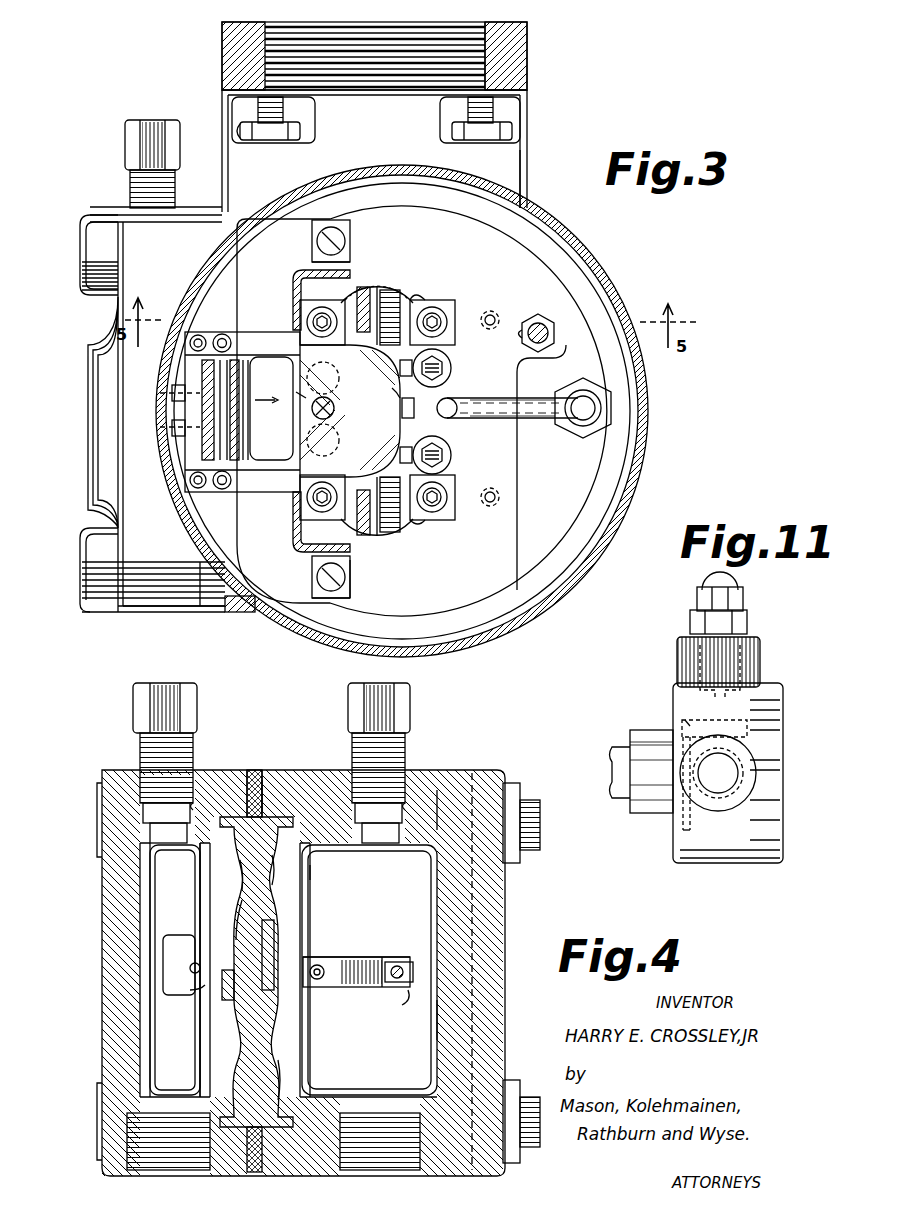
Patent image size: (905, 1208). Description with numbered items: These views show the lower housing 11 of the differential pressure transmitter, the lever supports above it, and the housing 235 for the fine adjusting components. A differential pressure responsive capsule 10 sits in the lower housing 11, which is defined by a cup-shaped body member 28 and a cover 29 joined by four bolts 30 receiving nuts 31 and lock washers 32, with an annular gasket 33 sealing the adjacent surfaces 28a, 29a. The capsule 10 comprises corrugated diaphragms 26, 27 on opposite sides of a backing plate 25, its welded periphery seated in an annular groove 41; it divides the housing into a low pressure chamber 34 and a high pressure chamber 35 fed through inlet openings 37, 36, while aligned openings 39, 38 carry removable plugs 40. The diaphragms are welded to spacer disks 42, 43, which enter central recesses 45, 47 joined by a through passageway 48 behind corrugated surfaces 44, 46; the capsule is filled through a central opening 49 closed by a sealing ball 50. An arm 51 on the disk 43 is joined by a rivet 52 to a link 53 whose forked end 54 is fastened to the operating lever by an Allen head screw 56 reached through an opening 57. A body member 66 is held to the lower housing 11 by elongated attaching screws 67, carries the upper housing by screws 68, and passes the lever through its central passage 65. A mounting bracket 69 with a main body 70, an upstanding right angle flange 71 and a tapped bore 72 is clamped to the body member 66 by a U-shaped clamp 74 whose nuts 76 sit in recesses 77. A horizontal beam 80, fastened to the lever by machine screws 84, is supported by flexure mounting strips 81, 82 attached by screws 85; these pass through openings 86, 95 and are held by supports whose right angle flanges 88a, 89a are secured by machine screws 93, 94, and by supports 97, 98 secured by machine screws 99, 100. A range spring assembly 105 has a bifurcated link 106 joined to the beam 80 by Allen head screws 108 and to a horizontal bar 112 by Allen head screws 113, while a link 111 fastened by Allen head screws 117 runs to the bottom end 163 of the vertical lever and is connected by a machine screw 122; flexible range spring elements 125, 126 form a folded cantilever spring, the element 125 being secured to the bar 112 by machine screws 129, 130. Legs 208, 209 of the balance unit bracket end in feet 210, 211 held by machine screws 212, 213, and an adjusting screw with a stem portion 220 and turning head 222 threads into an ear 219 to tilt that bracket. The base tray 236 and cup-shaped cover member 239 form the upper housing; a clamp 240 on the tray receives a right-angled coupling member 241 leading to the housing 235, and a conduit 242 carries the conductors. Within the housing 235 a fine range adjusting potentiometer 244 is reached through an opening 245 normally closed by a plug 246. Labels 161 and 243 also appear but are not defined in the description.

In FIG. 4, the differential pressure responsive capsule 10 is at (304, 870).
In FIG. 4, the lower housing 11 is at (508, 926).
In FIG. 4, the backing plate 25 is at (282, 1062).
In FIG. 4, the diaphragm 26 is at (222, 898).
In FIG. 4, the diaphragm 27 is at (280, 1085).
In FIG. 3, the body member 28 is at (240, 612).
In FIG. 4, the body member 28 is at (445, 775).
In FIG. 4, the surface of body member 28a is at (264, 768).
In FIG. 3, the cover 29 is at (150, 612).
In FIG. 4, the cover 29 is at (102, 948).
In FIG. 4, the surface of cover 29a is at (244, 766).
In FIG. 3, the bolts 30 is at (82, 222).
In FIG. 4, the bolts 30 is at (97, 802).
In FIG. 4, the nuts 31 is at (526, 786).
In FIG. 4, the lock washers 32 is at (476, 772).
In FIG. 3, the annular gasket 33 is at (222, 612).
In FIG. 4, the annular gasket 33 is at (254, 772).
In FIG. 4, the first pressure chamber 34 is at (160, 880).
In FIG. 4, the second pressure chamber 35 is at (430, 1040).
In FIG. 4, the inlet opening 36 is at (390, 1170).
In FIG. 4, the inlet opening 37 is at (160, 1170).
In FIG. 4, the opening 38 is at (407, 803).
In FIG. 4, the opening 39 is at (193, 800).
In FIG. 3, the plugs 40 is at (140, 120).
In FIG. 4, the plugs 40 is at (133, 698).
In FIG. 4, the annular groove 41 is at (282, 796).
In FIG. 4, the spacer disk 42 is at (215, 936).
In FIG. 4, the spacer disk 43 is at (312, 915).
In FIG. 4, the corrugated surface 44 is at (250, 875).
In FIG. 4, the central recess 45 is at (248, 917).
In FIG. 4, the corrugated surface 46 is at (275, 870).
In FIG. 4, the central recess 47 is at (259, 955).
In FIG. 4, the through passageway 48 is at (243, 987).
In FIG. 4, the central opening 49 is at (215, 990).
In FIG. 4, the sealing ball 50 is at (194, 970).
In FIG. 4, the arm 51 is at (318, 985).
In FIG. 4, the rivet 52 is at (340, 987).
In FIG. 4, the link 53 is at (372, 956).
In FIG. 4, the forked end 54 is at (398, 956).
In FIG. 4, the Allen head screw 56 is at (405, 995).
In FIG. 4, the opening 57 is at (415, 976).
In FIG. 3, the central passage 65 is at (365, 375).
In FIG. 3, the body member 66 is at (492, 245).
In FIG. 3, the elongated attaching screws 67 is at (292, 384).
In FIG. 3, the screws 68 is at (490, 312).
In FIG. 3, the mounting bracket 69 is at (528, 40).
In FIG. 3, the main body 70 is at (527, 190).
In FIG. 3, the right angle flange 71 is at (528, 60).
In FIG. 3, the tapped bore 72 is at (272, 22).
In FIG. 3, the U-shaped clamp 74 is at (494, 110).
In FIG. 3, the nuts 76 is at (240, 128).
In FIG. 3, the recesses 77 is at (225, 139).
In FIG. 3, the horizontal beam 80 is at (400, 292).
In FIG. 3, the flexure mounting strip 81 is at (378, 295).
In FIG. 3, the flexure mounting strip 82 is at (388, 525).
In FIG. 3, the machine screws 84 is at (432, 400).
In FIG. 3, the screws 85 is at (363, 292).
In FIG. 3, the opening 86 is at (395, 300).
In FIG. 3, the right angle flange 88a is at (297, 286).
In FIG. 3, the right angle flange 89a is at (420, 300).
In FIG. 3, the machine screw 93 is at (305, 312).
In FIG. 3, the machine screw 94 is at (440, 310).
In FIG. 3, the opening 95 is at (378, 540).
In FIG. 3, the support 97 is at (420, 522).
In FIG. 3, the support 98 is at (293, 548).
In FIG. 3, the machine screw 99 is at (445, 485).
In FIG. 3, the machine screw 100 is at (305, 510).
In FIG. 3, the range spring assembly 105 is at (195, 512).
In FIG. 3, the bifurcated link 106 is at (405, 525).
In FIG. 3, the Allen head screws 108 is at (400, 366).
In FIG. 3, the link 111 is at (271, 401).
In FIG. 3, the horizontal bar 112 is at (185, 455).
In FIG. 3, the Allen head screws 113 is at (198, 335).
In FIG. 3, the Allen head screws 117 is at (224, 334).
In FIG. 3, the machine screw 122 is at (318, 416).
In FIG. 3, the range spring element 125 is at (205, 408).
In FIG. 3, the range spring element 126 is at (238, 418).
In FIG. 3, the machine screw 129 is at (172, 392).
In FIG. 3, the machine screw 130 is at (172, 428).
In FIG. 3, the lever arm 161 is at (393, 383).
In FIG. 3, the bottom end of vertical lever 163 is at (305, 400).
In FIG. 3, the leg 208 is at (348, 266).
In FIG. 3, the leg 209 is at (352, 566).
In FIG. 3, the foot 210 is at (317, 242).
In FIG. 3, the foot 211 is at (340, 600).
In FIG. 3, the machine screw 212 is at (350, 222).
In FIG. 3, the machine screw 213 is at (315, 566).
In FIG. 3, the ear 219 is at (558, 362).
In FIG. 3, the stem portion 220 is at (540, 316).
In FIG. 3, the turning head 222 is at (554, 330).
In FIG. 11, the housing 235 is at (745, 864).
In FIG. 3, the base tray 236 is at (645, 450).
In FIG. 3, the cup-shaped cover member 239 is at (633, 318).
In FIG. 3, the clamp 240 is at (598, 436).
In FIG. 11, the right-angled coupling member 241 is at (614, 750).
In FIG. 3, the conduit 242 is at (540, 420).
In FIG. 11, the body portion 243 is at (678, 832).
In FIG. 11, the fine range adjusting potentiometer 244 is at (682, 720).
In FIG. 11, the opening 245 is at (680, 690).
In FIG. 11, the plug 246 is at (700, 580).